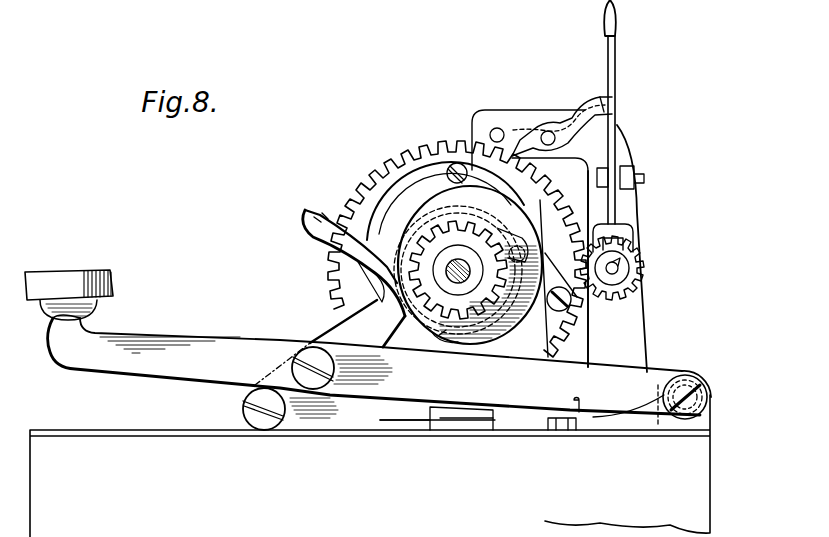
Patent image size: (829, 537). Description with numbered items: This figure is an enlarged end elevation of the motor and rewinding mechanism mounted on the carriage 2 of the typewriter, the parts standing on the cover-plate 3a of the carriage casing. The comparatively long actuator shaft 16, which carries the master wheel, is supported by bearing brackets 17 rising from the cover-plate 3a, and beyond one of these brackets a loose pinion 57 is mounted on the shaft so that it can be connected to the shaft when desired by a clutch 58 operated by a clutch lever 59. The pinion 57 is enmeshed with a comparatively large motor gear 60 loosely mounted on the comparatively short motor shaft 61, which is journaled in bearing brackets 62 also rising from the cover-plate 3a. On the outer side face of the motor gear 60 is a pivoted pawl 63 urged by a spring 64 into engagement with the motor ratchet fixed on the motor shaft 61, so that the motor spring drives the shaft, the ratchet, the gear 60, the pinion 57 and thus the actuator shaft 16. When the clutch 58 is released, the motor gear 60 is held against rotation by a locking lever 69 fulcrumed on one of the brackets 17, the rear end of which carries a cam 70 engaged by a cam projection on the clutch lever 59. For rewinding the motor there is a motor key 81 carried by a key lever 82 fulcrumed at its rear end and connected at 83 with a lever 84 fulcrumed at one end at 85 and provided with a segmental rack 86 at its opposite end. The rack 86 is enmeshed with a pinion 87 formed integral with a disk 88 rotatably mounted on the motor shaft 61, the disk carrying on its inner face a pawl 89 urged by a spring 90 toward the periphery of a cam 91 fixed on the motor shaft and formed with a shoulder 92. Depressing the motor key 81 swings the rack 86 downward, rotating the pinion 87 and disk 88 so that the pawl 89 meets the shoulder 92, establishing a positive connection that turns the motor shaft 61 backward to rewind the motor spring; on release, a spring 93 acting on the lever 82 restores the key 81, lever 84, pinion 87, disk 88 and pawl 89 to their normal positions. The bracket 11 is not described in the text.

The carriage 2 is at (710, 492).
The cover-plate 3a is at (436, 432).
The bracket 11 is at (636, 341).
The actuator shaft 16 is at (630, 268).
The bearing brackets 17 is at (552, 113).
The loose pinion 57 is at (640, 301).
The clutch 58 is at (627, 249).
The clutch lever 59 is at (617, 58).
The motor gear 60 is at (420, 158).
The motor shaft 61 is at (458, 270).
The bearing brackets 62 is at (468, 416).
The pivoted pawl 63 is at (552, 270).
The spring 64 is at (393, 188).
The locking lever 69 is at (530, 141).
The cam 70 is at (600, 105).
The motor key 81 is at (106, 280).
The key lever 82 is at (183, 333).
The connection 83 is at (310, 362).
The lever 84 is at (357, 323).
The fulcrum 85 is at (244, 410).
The segmental rack 86 is at (354, 249).
The pinion 87 is at (507, 244).
The disk 88 is at (487, 332).
The pawl 89 is at (438, 340).
The spring 90 is at (431, 207).
The cam 91 is at (481, 227).
The shoulder 92 is at (458, 267).
The spring 93 is at (613, 417).